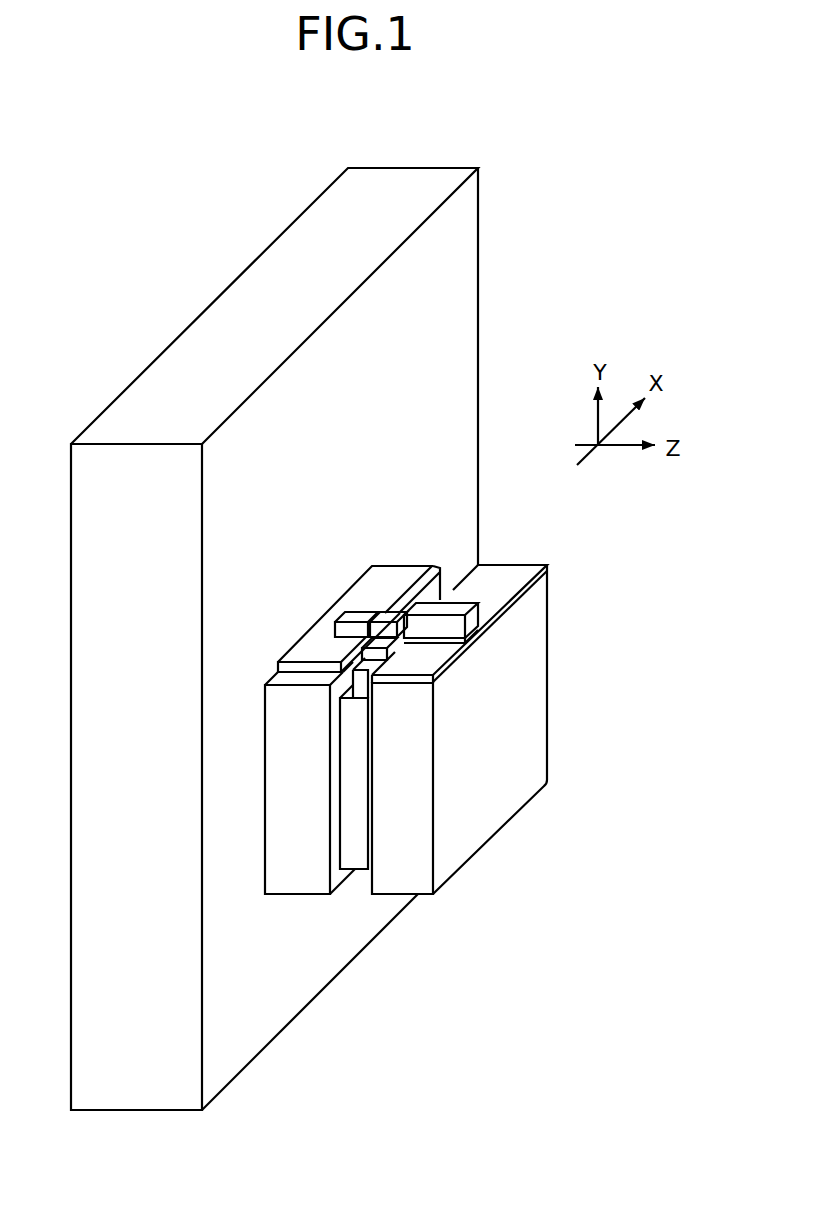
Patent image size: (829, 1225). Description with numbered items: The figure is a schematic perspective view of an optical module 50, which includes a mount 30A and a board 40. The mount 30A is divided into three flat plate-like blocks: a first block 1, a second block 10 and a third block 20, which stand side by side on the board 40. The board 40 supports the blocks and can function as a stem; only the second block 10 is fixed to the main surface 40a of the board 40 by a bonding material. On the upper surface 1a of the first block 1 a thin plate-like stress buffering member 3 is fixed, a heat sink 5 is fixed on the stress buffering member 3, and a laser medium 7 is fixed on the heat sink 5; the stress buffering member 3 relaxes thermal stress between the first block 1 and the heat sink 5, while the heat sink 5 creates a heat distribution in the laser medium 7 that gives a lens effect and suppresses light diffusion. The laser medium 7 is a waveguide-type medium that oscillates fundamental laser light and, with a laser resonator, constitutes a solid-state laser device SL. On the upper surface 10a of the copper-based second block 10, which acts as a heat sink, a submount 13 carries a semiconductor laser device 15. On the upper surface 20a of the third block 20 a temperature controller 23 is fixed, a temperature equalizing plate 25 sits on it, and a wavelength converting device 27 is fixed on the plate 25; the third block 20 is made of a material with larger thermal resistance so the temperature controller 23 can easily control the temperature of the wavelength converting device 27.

The optical module 50 is at (642, 165).
The board 40 is at (405, 185).
The main surface of the board 40a is at (465, 212).
The second block 10 is at (293, 878).
The upper surface of the second block 10a is at (275, 683).
The submount 13 is at (322, 625).
The semiconductor laser device 15 is at (355, 613).
The laser medium 7 is at (387, 613).
The heat sink 5 is at (360, 652).
The stress buffering member 3 is at (337, 690).
The first block 1 is at (353, 853).
The upper surface of the first block 1a is at (360, 681).
The solid-state laser device SL is at (412, 595).
The third block 20 is at (407, 870).
The upper surface of the third block 20a is at (435, 659).
The temperature controller 23 is at (432, 657).
The temperature equalizing plate 25 is at (487, 630).
The wavelength converting device 27 is at (453, 610).
The mount 30A is at (493, 802).